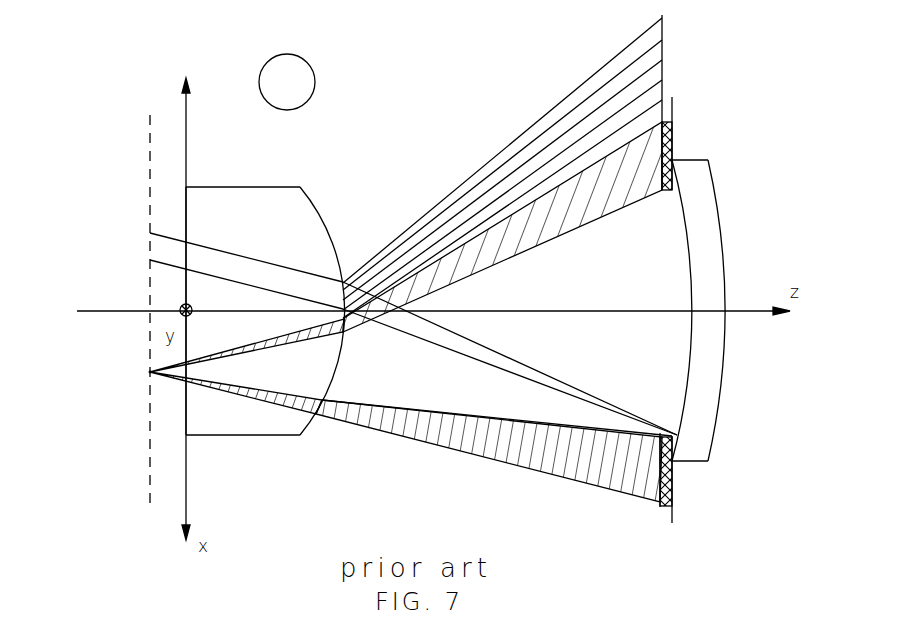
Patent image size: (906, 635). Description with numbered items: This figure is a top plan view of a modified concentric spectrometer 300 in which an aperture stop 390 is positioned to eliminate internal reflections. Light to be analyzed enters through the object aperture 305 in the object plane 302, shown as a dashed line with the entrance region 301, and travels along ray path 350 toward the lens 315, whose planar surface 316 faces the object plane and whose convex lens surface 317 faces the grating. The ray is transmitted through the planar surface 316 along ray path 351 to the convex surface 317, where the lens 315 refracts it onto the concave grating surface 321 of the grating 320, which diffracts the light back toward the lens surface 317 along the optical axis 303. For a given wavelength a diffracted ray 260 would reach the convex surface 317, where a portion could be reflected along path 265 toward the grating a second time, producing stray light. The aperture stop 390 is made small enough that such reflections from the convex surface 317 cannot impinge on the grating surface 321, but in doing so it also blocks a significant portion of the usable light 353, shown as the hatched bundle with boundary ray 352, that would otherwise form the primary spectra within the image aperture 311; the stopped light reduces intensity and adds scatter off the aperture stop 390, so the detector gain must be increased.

The prior art optical system 300 is at (287, 82).
The object plane upper portion 301 is at (150, 118).
The object plane 302 is at (150, 505).
The optical axis z 303 is at (736, 312).
The object aperture 305 is at (152, 373).
The image aperture 311 is at (152, 248).
The lens 315 is at (240, 420).
The planar surface 316 is at (186, 420).
The convex lens surface 317 is at (310, 423).
The grating 320 is at (697, 432).
The grating surface 321 is at (691, 354).
The ray path 350 is at (180, 374).
The ray path 351 is at (275, 397).
The upper boundary ray of stray bundle 352 is at (447, 413).
The usable light 353 is at (477, 460).
The diffracted ray 260 is at (470, 354).
The reflected ray path 265 is at (513, 247).
The aperture stop 390 is at (672, 480).